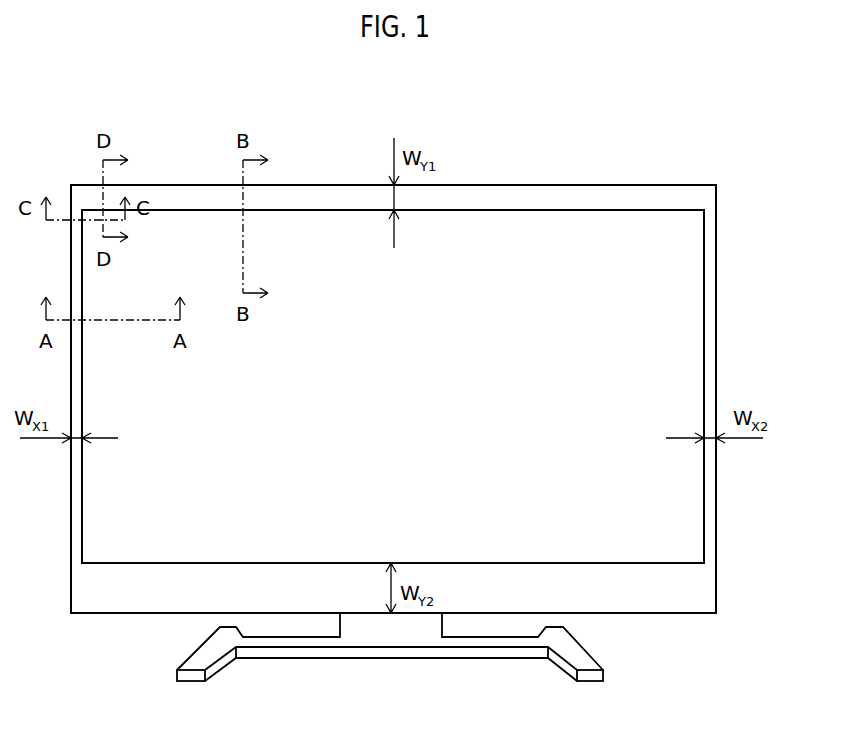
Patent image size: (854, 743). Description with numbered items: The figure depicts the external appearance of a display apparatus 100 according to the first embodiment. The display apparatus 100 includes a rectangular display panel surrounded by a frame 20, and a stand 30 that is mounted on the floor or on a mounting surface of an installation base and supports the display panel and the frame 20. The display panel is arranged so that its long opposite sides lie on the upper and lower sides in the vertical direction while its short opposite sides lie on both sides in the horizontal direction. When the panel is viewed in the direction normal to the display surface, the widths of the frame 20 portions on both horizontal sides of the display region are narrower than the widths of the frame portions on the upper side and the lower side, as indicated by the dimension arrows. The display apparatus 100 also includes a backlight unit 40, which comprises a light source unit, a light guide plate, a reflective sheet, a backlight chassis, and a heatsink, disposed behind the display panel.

The display apparatus 100 is at (608, 127).
The frame 20 is at (706, 588).
The stand 30 is at (405, 627).
The backlight unit 40 is at (688, 527).